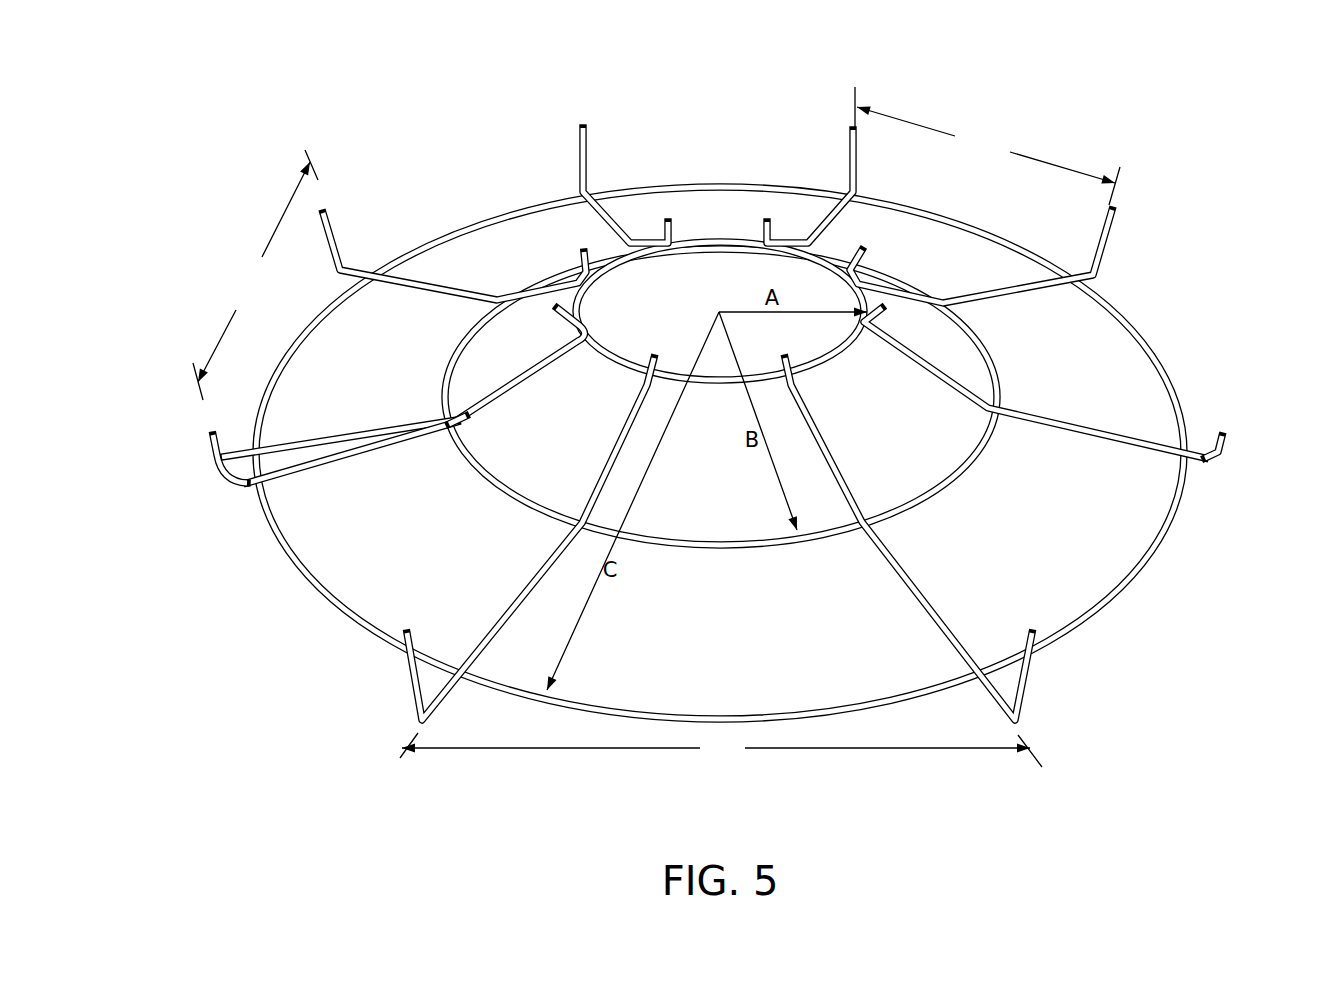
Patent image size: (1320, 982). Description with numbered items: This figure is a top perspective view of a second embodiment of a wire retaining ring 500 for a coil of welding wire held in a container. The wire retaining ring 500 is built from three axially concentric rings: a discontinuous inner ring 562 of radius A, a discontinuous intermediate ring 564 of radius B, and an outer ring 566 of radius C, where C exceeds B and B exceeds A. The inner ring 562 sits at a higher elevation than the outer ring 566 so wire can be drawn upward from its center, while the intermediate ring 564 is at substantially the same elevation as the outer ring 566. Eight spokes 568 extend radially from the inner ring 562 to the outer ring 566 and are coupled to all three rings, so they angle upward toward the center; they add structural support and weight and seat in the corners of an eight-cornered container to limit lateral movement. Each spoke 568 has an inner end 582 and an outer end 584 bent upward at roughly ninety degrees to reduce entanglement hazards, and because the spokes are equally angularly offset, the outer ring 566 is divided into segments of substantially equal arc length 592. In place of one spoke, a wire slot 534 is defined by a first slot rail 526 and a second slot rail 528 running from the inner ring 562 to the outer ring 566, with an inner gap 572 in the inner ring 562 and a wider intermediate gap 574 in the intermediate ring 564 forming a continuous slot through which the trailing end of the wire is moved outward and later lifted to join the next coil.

The wire retaining ring 500 is at (220, 135).
The first slot rail 526 is at (244, 455).
The second slot rail 528 is at (247, 483).
The wire slot 534 is at (303, 457).
The inner ring 562 is at (700, 245).
The intermediate ring 564 is at (877, 273).
The outer ring 566 is at (1115, 312).
The spokes 568 is at (1098, 437).
The inner gap 572 is at (590, 329).
The intermediate gap 574 is at (460, 421).
The inner end 582 is at (577, 250).
The outer end 584 is at (1113, 228).
The arc length 592 is at (656, 427).